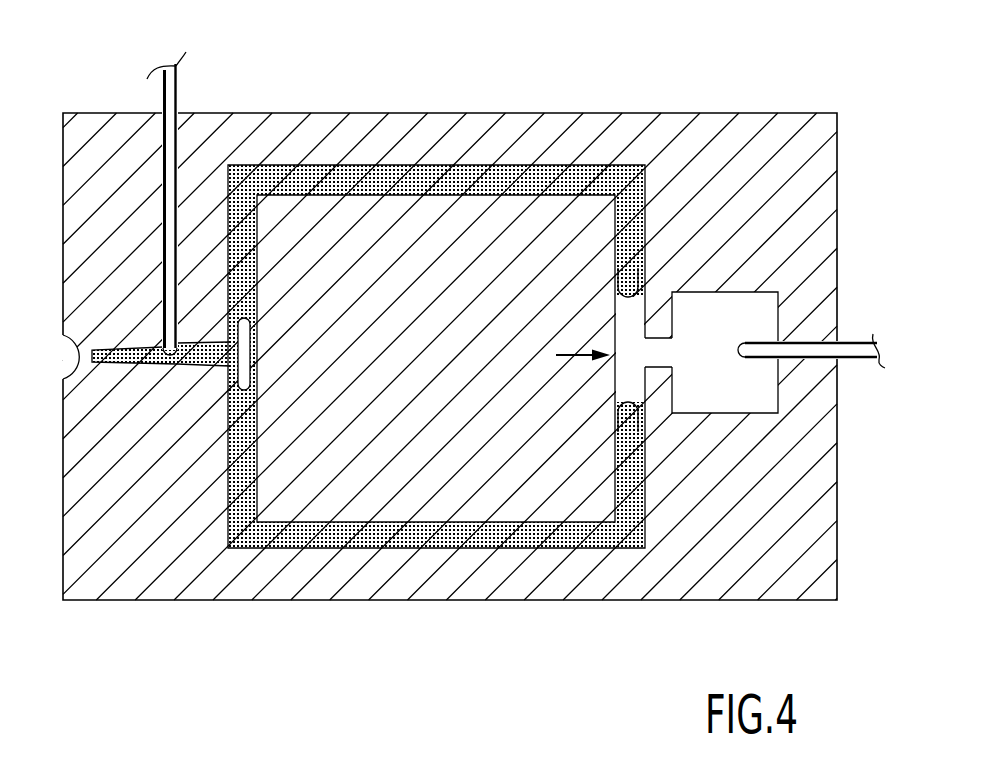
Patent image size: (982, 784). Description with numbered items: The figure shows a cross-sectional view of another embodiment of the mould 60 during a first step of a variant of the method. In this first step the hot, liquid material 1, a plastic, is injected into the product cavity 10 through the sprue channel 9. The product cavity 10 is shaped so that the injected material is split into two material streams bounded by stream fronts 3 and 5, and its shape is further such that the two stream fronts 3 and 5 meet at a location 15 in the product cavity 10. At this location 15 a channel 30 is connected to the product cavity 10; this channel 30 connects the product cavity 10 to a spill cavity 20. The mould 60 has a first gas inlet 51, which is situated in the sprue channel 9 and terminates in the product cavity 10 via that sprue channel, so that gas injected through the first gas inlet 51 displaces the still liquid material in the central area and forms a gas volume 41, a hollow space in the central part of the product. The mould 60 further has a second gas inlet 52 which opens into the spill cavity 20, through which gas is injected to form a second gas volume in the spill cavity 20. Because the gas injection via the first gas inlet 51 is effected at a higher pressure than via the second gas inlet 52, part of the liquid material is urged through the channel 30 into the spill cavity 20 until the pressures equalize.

The mould 60 is at (109, 94).
The material 1 is at (436, 356).
The product cavity 10 is at (518, 190).
The stream front 3 is at (617, 289).
The stream front 5 is at (620, 410).
The location 15 is at (570, 355).
The channel 30 is at (653, 352).
The spill cavity 20 is at (705, 308).
The second gas inlet 52 is at (761, 343).
The first gas inlet 51 is at (181, 352).
The sprue channel 9 is at (141, 365).
The gas volume 41 is at (203, 355).